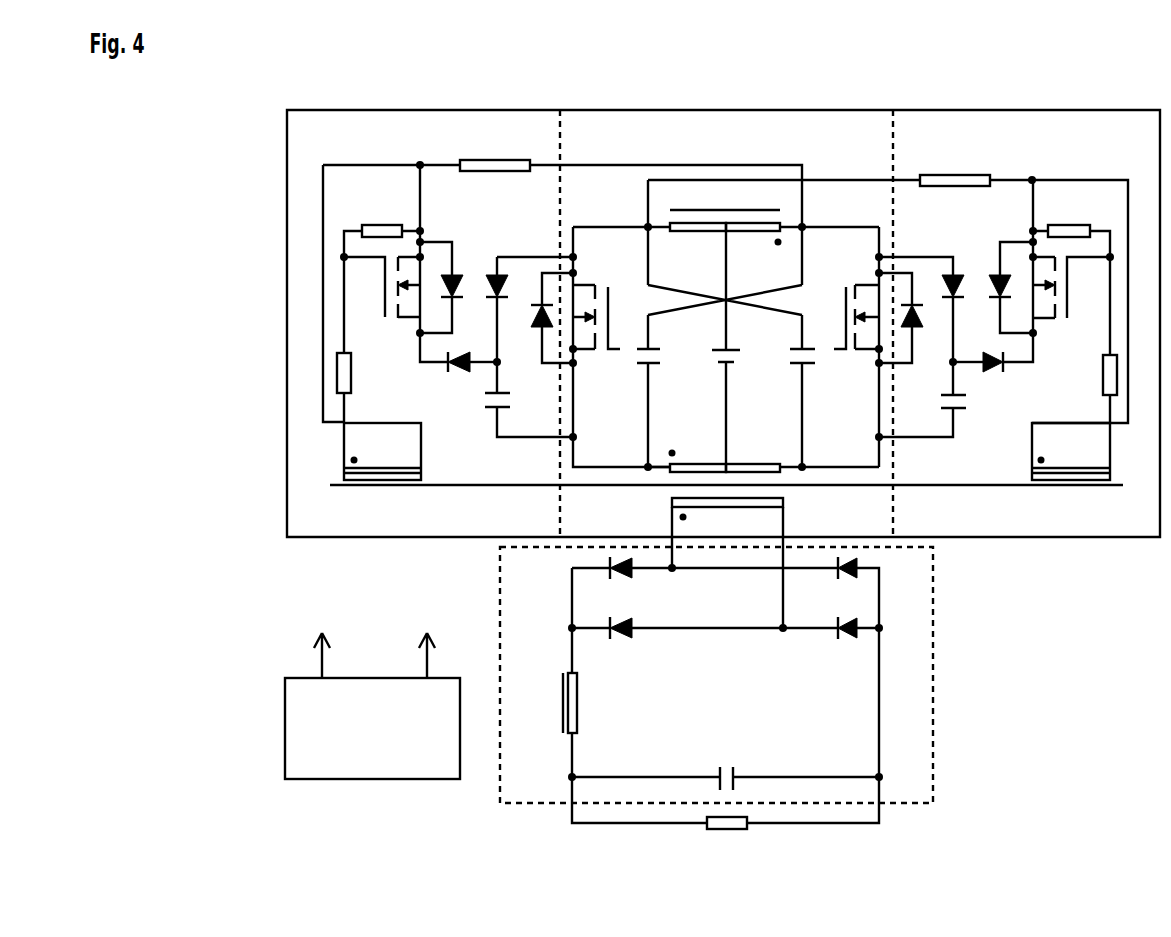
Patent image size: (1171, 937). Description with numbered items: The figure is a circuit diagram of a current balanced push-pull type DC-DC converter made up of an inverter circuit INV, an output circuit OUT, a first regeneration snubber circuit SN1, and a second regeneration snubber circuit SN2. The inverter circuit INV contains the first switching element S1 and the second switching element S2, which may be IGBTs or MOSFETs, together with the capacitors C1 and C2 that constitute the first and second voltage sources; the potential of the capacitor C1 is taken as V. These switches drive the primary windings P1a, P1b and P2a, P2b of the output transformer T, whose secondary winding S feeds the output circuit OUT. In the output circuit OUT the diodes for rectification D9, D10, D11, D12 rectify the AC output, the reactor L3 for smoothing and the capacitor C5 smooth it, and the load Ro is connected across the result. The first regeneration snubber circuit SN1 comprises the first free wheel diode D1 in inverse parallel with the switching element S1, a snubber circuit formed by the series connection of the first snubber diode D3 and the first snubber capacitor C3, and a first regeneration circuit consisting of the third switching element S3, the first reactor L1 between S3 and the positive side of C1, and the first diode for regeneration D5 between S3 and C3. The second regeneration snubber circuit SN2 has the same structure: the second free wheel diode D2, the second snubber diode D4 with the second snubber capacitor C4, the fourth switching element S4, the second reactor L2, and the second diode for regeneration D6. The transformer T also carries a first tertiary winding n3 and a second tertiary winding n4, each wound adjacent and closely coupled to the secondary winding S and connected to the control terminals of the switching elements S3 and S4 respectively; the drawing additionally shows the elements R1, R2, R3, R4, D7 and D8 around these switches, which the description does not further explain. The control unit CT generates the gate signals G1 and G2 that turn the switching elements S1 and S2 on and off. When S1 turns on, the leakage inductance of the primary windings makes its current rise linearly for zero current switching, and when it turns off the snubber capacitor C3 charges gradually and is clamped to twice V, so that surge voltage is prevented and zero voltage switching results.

The first regeneration snubber circuit SN1 is at (507, 110).
The second regeneration snubber circuit SN2 is at (1093, 110).
The inverter circuit INV is at (815, 110).
The output circuit OUT is at (933, 803).
The control unit CT is at (373, 779).
The gate signal G1 is at (322, 638).
The gate signal G2 is at (427, 638).
The first reactor L1 is at (495, 150).
The second reactor L2 is at (955, 163).
The reactor for smoothing L3 is at (553, 703).
The first resistor R1 is at (358, 340).
The second resistor R2 is at (1095, 340).
The third resistor R3 is at (382, 225).
The fourth resistor R4 is at (1071, 225).
The load Ro is at (727, 841).
The first switching element S1 is at (605, 317).
The second switching element S2 is at (848, 317).
The third switching element S3 is at (382, 287).
The fourth switching element S4 is at (1071, 287).
The first free wheel diode D1 is at (544, 318).
The second free wheel diode D2 is at (909, 318).
The first snubber diode D3 is at (529, 292).
The second snubber diode D4 is at (923, 294).
The first diode for regeneration D5 is at (472, 382).
The second diode for regeneration D6 is at (980, 383).
The seventh diode D7 is at (441, 271).
The eighth diode D8 is at (1010, 271).
The diode for rectification D9 is at (636, 583).
The diode for rectification D10 is at (827, 583).
The diode for rectification D11 is at (638, 644).
The diode for rectification D12 is at (828, 644).
The capacitor C1 is at (662, 353).
The capacitor C2 is at (789, 353).
The first snubber capacitor C3 is at (529, 399).
The second snubber capacitor C4 is at (922, 399).
The capacitor C5 is at (725, 759).
The first tertiary winding n3 is at (382, 451).
The second tertiary winding n4 is at (1071, 451).
The primary winding P1a is at (764, 238).
The primary winding P1b is at (687, 238).
The primary winding P2a is at (802, 453).
The primary winding P2b is at (687, 453).
The potential of capacitor C1 V is at (730, 347).
The output transformer T is at (651, 506).
The secondary winding S is at (727, 563).